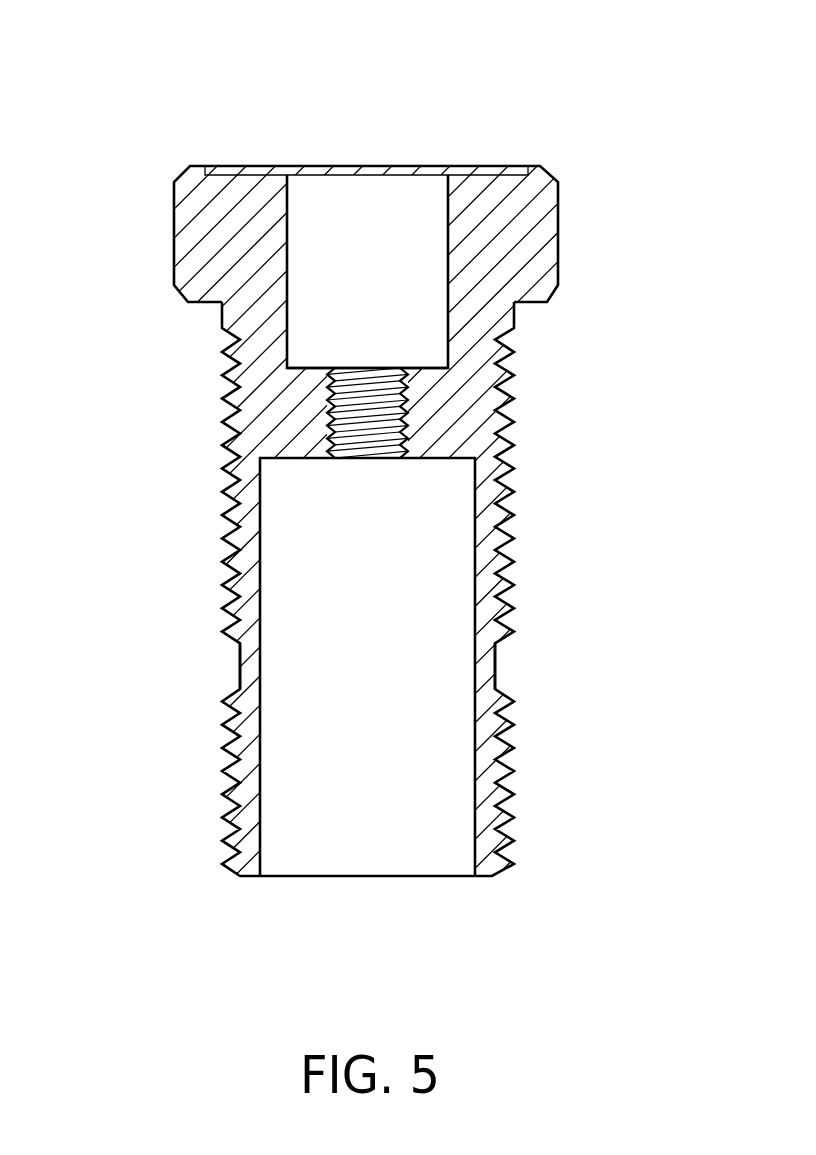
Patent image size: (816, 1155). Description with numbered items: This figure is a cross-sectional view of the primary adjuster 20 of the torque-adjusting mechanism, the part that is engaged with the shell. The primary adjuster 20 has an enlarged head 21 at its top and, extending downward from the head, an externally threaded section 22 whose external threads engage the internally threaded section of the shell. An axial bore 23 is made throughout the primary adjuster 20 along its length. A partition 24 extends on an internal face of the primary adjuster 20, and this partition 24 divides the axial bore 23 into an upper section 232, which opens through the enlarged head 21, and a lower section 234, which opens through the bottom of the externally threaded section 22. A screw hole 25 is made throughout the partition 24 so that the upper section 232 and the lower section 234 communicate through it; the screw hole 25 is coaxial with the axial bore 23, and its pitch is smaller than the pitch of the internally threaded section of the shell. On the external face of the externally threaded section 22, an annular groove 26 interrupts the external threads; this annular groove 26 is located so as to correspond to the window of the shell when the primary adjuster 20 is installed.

The primary adjuster 20 is at (408, 442).
The enlarged head 21 is at (186, 229).
The externally threaded section 22 is at (497, 793).
The axial bore 23 is at (430, 525).
The upper section 232 is at (448, 267).
The lower section 234 is at (463, 667).
The partition 24 is at (300, 368).
The screw hole 25 is at (338, 432).
The annular groove 26 is at (242, 668).